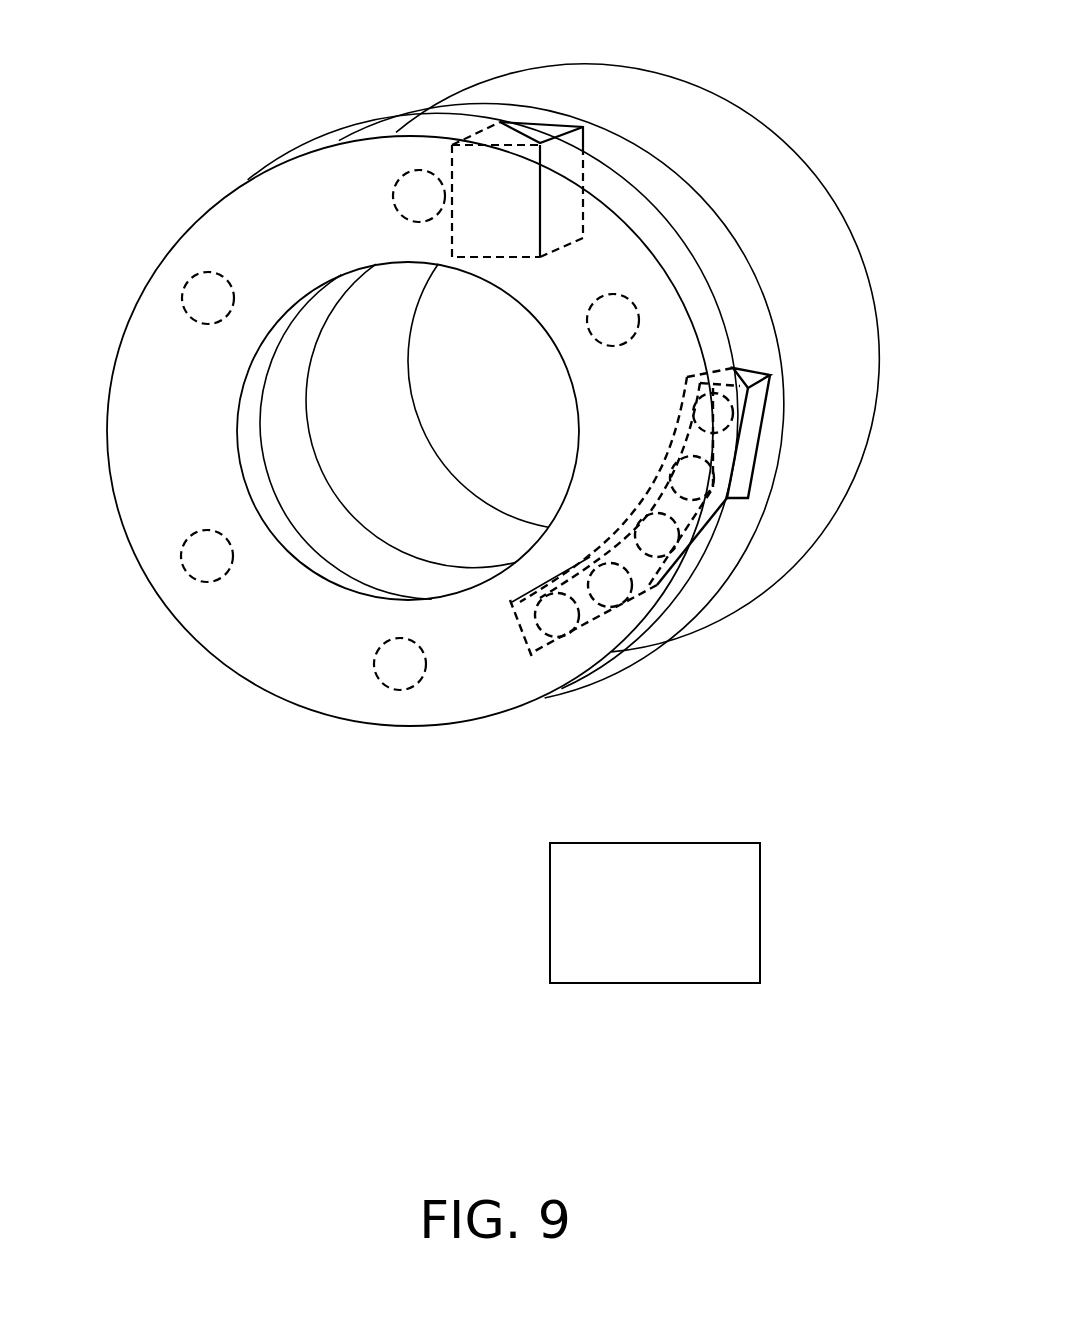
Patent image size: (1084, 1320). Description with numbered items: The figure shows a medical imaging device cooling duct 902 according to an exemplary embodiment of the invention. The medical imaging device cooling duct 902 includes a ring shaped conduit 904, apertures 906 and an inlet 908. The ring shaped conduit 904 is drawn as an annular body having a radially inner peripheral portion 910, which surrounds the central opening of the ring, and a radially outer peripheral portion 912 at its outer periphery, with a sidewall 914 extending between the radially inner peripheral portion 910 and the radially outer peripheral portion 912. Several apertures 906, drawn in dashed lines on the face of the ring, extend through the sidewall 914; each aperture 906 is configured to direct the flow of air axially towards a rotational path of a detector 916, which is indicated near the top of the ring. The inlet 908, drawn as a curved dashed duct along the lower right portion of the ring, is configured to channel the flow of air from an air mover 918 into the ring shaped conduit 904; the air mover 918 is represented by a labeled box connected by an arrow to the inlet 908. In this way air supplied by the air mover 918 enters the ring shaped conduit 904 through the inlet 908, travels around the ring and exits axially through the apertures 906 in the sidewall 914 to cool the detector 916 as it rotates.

The medical imaging device cooling duct 902 is at (283, 947).
The ring shaped conduit 904 is at (240, 683).
The aperture 906 is at (393, 195).
The inlet 908 is at (516, 704).
The radially inner peripheral portion 910 is at (288, 528).
The radially outer peripheral portion 912 is at (620, 197).
The sidewall 914 is at (303, 222).
The detector 916 is at (543, 123).
The air mover 918 is at (760, 912).